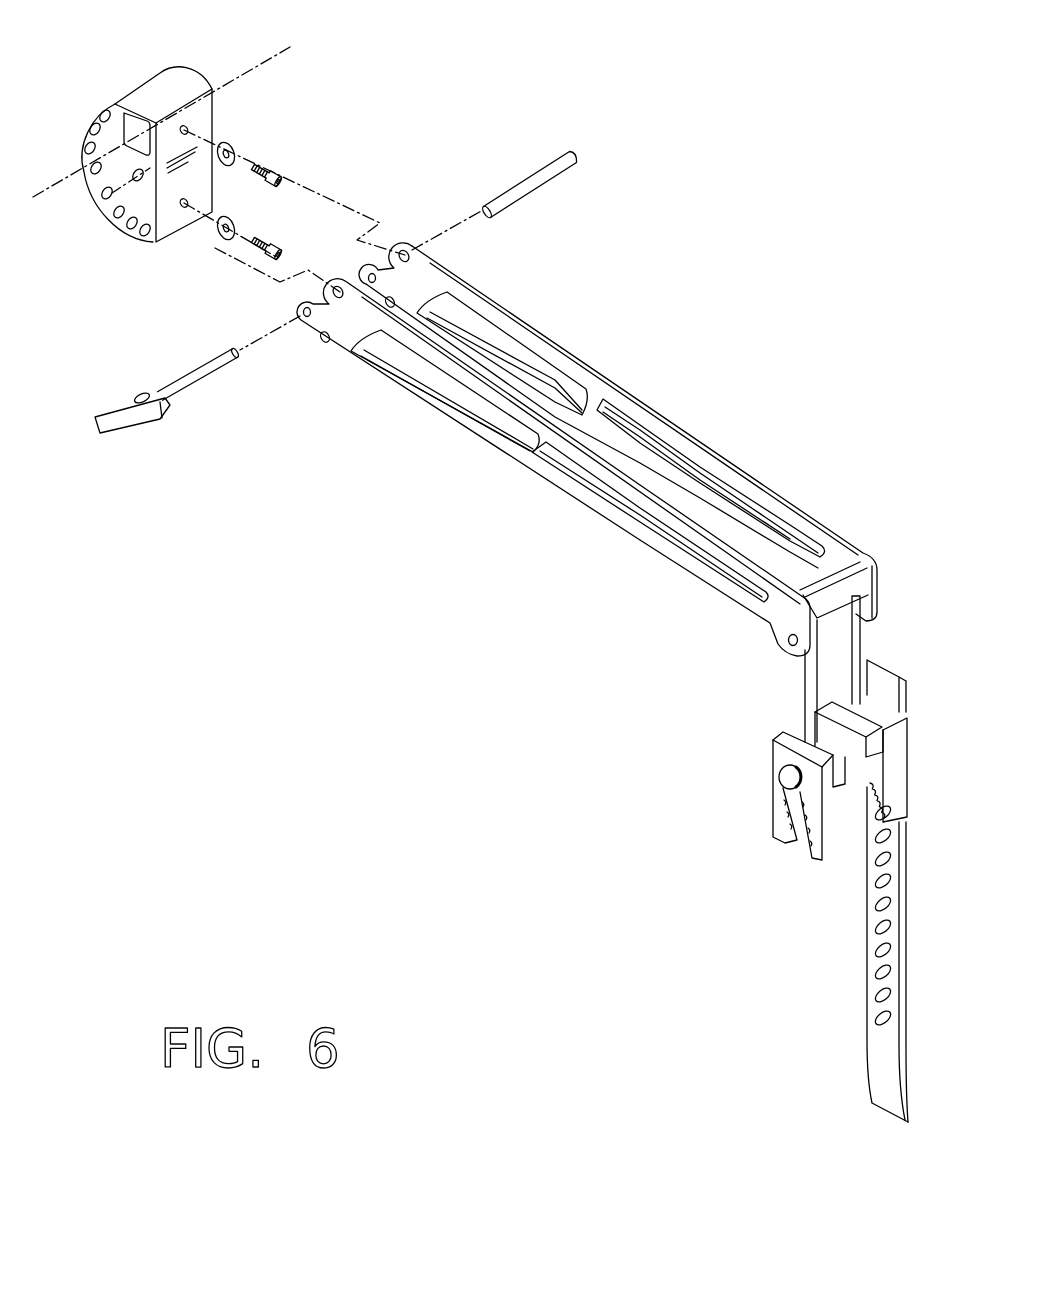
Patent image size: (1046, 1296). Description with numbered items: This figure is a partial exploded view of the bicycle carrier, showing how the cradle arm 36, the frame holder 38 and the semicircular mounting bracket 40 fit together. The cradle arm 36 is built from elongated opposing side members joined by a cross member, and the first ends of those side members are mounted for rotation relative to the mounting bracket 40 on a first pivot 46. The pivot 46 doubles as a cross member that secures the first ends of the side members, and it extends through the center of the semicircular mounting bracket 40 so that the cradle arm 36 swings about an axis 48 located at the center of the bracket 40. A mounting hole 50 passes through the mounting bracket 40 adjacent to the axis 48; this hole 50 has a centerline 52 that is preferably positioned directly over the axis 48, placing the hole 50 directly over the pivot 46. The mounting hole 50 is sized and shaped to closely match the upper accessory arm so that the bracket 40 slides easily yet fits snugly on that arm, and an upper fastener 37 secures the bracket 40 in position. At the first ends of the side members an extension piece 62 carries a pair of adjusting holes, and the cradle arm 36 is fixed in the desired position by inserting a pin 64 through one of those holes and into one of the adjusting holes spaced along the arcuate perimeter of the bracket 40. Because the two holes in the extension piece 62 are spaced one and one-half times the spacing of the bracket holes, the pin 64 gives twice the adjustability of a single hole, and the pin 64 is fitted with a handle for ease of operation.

The cradle arm 36 is at (545, 322).
The upper fastener 37 is at (273, 248).
The frame holder 38 is at (742, 777).
The mounting bracket 40 is at (155, 81).
The first pivot 46 is at (518, 192).
The axis 48 is at (97, 204).
The mounting hole 50 is at (131, 127).
The centerline 52 is at (248, 72).
The extension piece 62 is at (301, 311).
The pin 64 is at (180, 380).